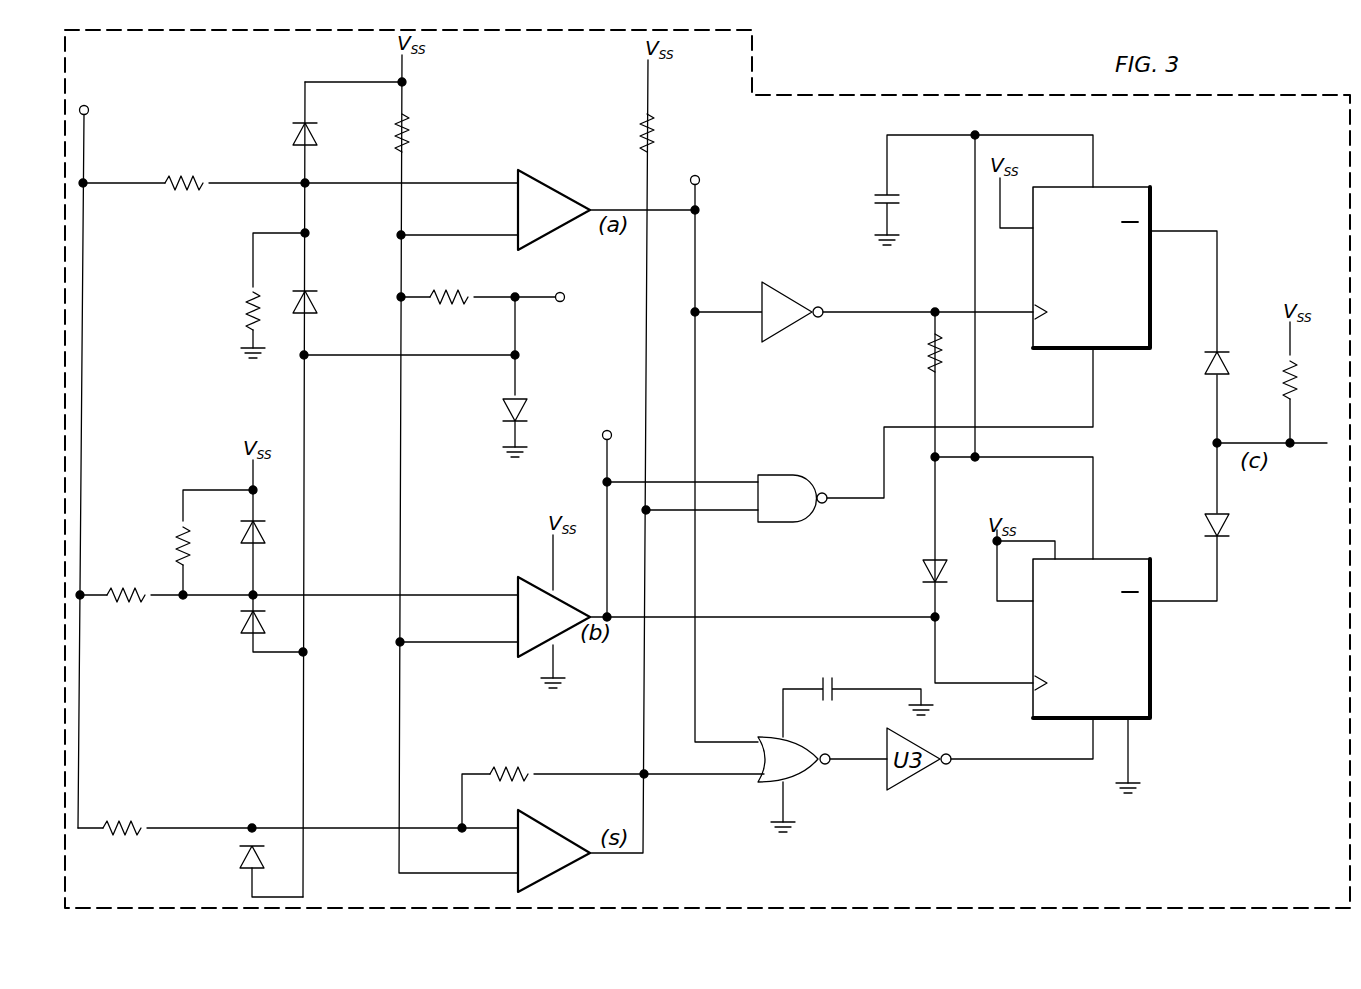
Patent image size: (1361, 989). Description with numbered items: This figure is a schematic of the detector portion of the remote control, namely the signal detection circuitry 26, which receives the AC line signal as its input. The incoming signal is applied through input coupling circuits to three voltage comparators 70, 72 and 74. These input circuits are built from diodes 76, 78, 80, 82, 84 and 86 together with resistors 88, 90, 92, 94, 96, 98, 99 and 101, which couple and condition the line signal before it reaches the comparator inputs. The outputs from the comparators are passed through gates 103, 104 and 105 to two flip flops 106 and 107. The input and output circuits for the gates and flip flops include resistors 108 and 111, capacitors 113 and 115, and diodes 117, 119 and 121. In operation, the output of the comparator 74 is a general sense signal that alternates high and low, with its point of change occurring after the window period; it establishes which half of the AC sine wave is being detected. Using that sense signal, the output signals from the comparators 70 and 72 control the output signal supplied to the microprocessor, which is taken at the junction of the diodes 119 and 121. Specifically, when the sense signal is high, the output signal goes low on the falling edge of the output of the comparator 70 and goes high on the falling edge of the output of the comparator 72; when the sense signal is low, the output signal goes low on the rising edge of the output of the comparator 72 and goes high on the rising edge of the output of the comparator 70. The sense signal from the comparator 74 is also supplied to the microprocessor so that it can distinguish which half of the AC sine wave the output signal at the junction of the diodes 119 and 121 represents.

The signal detection circuitry 26 is at (58, 690).
The voltage comparator 70 is at (558, 195).
The voltage comparator 72 is at (533, 577).
The voltage comparator 74 is at (552, 832).
The diode 76 is at (317, 135).
The diode 78 is at (317, 303).
The diode 80 is at (502, 408).
The diode 82 is at (265, 543).
The diode 84 is at (265, 633).
The diode 86 is at (264, 868).
The resistor 88 is at (410, 128).
The resistor 90 is at (205, 182).
The resistor 92 is at (248, 318).
The resistor 94 is at (488, 272).
The resistor 96 is at (120, 600).
The resistor 98 is at (192, 522).
The resistor 99 is at (135, 826).
The resistor 101 is at (528, 772).
The gate 103 is at (776, 294).
The gate 104 is at (812, 462).
The gate 105 is at (772, 740).
The flip flop 106 is at (1148, 200).
The flip flop 107 is at (1135, 572).
The resistor 108 is at (646, 128).
The resistor 111 is at (1288, 375).
The capacitor 113 is at (878, 200).
The capacitor 115 is at (826, 684).
The diode 117 is at (925, 570).
The diode 119 is at (1205, 368).
The diode 121 is at (1227, 527).